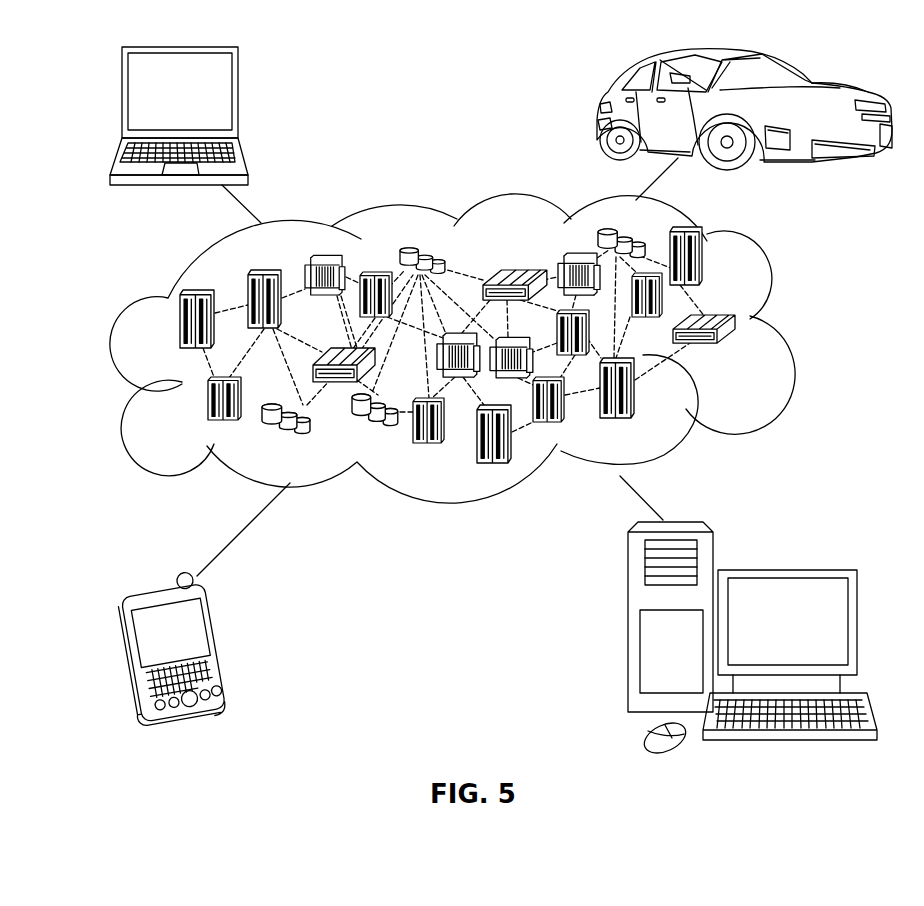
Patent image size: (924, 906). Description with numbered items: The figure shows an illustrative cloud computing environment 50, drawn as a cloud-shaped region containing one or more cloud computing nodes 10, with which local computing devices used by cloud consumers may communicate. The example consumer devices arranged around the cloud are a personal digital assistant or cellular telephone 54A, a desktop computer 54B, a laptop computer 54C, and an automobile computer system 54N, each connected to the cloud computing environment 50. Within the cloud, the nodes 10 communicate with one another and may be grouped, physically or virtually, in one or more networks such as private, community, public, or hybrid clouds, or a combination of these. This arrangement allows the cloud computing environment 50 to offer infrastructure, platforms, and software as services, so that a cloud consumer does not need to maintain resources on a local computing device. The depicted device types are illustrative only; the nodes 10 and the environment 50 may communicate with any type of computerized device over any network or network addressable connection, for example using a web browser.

The cloud computing nodes 10 is at (738, 353).
The cloud computing environment 50 is at (790, 327).
The personal digital assistant (PDA) or cellular telephone 54A is at (228, 647).
The desktop computer 54B is at (785, 567).
The laptop computer 54C is at (238, 100).
The automobile computer system 54N is at (603, 110).